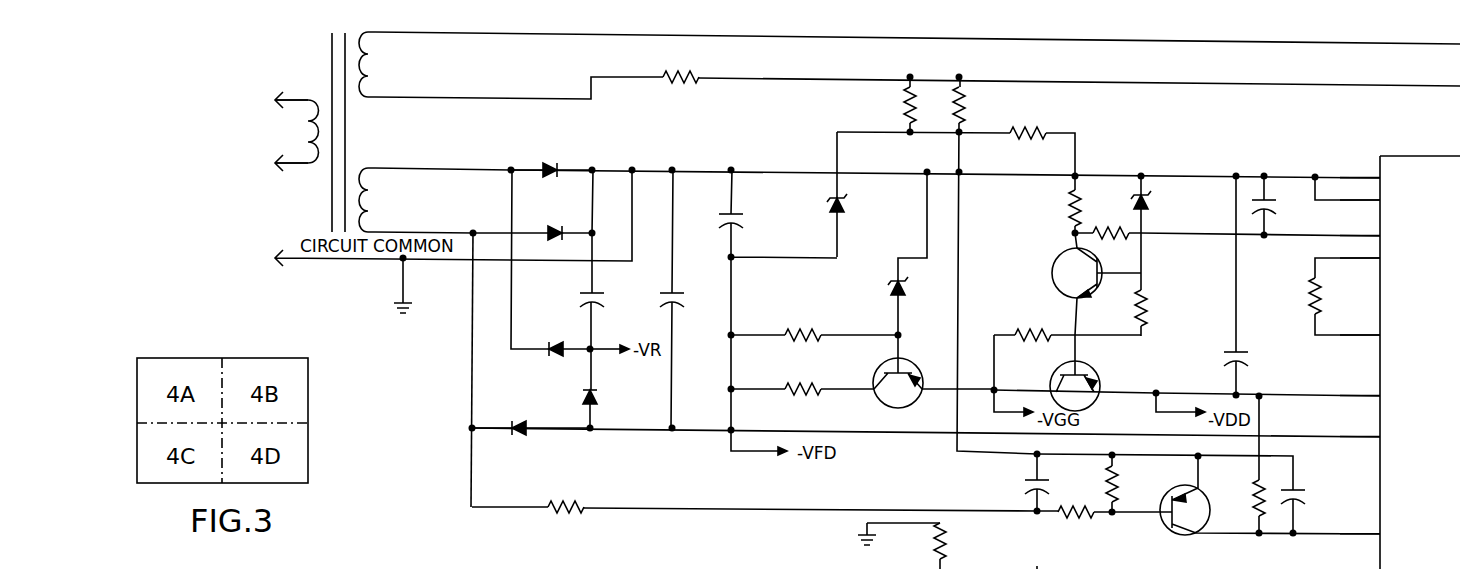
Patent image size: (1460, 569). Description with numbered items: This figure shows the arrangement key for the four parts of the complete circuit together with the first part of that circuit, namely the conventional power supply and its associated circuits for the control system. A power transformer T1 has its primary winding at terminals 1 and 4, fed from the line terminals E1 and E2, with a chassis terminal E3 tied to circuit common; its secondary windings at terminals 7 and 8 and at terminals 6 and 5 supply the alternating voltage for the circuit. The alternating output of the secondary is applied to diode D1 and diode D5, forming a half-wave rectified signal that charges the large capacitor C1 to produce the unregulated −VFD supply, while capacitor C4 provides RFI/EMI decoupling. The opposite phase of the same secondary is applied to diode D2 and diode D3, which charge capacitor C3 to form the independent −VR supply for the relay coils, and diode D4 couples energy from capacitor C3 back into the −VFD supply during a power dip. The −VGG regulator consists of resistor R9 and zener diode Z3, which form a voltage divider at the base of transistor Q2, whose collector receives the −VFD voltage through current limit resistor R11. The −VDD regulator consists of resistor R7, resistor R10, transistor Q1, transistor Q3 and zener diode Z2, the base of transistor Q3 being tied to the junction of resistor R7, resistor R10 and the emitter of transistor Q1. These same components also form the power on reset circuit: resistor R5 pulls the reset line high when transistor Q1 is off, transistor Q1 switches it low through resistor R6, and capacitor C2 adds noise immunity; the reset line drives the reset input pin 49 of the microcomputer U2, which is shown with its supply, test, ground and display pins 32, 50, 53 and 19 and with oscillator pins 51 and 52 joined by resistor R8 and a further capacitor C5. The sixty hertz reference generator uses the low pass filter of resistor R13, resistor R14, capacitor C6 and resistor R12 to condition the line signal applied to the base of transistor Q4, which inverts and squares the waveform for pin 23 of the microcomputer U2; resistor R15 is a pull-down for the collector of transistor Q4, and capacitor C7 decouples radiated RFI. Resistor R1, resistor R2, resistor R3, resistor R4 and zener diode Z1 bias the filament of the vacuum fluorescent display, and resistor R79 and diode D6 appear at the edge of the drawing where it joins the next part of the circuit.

The power transformer T1 is at (314, 131).
The transformer primary terminal 1 is at (301, 90).
The transformer primary terminal 4 is at (301, 155).
The transformer secondary terminal 5 is at (424, 224).
The transformer secondary terminal 6 is at (443, 160).
The transformer secondary terminal 7 is at (917, 29).
The transformer secondary terminal 8 is at (519, 88).
The 120 VAC input terminal E1 is at (266, 101).
The 120 VAC input terminal E2 is at (266, 164).
The chassis terminal E3 is at (391, 219).
The resistor R1 is at (1061, 73).
The resistor R2 is at (892, 104).
The resistor R3 is at (995, 265).
The resistor R4 is at (1040, 140).
The resistor R5 is at (1058, 204).
The resistor R6 is at (1227, 235).
The resistor R7 is at (1155, 304).
The oscillator resistor R8 20K R8 is at (1310, 296).
The resistor R9 is at (814, 336).
The resistor R10 is at (1067, 335).
The current limit resistor R11 is at (802, 393).
The resistor R12 is at (1130, 483).
The resistor R13 is at (566, 508).
The resistor R14 is at (1104, 511).
The pull-down resistor R15 is at (1242, 464).
The resistor R79 82.5K R79 is at (928, 542).
The capacitor C1 is at (763, 220).
The capacitor C2 is at (1298, 205).
The capacitor C3 is at (606, 301).
The capacitor C4 is at (690, 299).
The capacitor C5 .047 C5 is at (1256, 285).
The capacitor C6 is at (1016, 482).
The capacitor C7 is at (1323, 506).
The diode D1 is at (551, 170).
The diode D2 is at (532, 235).
The diode D3 is at (545, 347).
The diode D4 is at (619, 400).
The diode D5 is at (531, 424).
The diode D6 is at (1038, 556).
The zener diode Z1 is at (873, 194).
The zener diode Z2 is at (1178, 224).
The zener diode Z3 is at (866, 254).
The transistor Q1 is at (1062, 284).
The transistor Q2 is at (926, 383).
The transistor Q3 is at (1088, 373).
The transistor Q4 is at (1258, 506).
The microcomputer U2 is at (1387, 353).
The block 32 is at (1360, 168).
The U2 TEST pin 50 is at (1360, 191).
The reset input pin 49 is at (1360, 227).
The U2 OSC1 pin 51 is at (1360, 249).
The U2 OSC2 pin 52 is at (1360, 326).
The U2 GND pin 53 is at (1360, 386).
The U2 V DISP pin 19 is at (1360, 428).
The pin 23 is at (1360, 524).